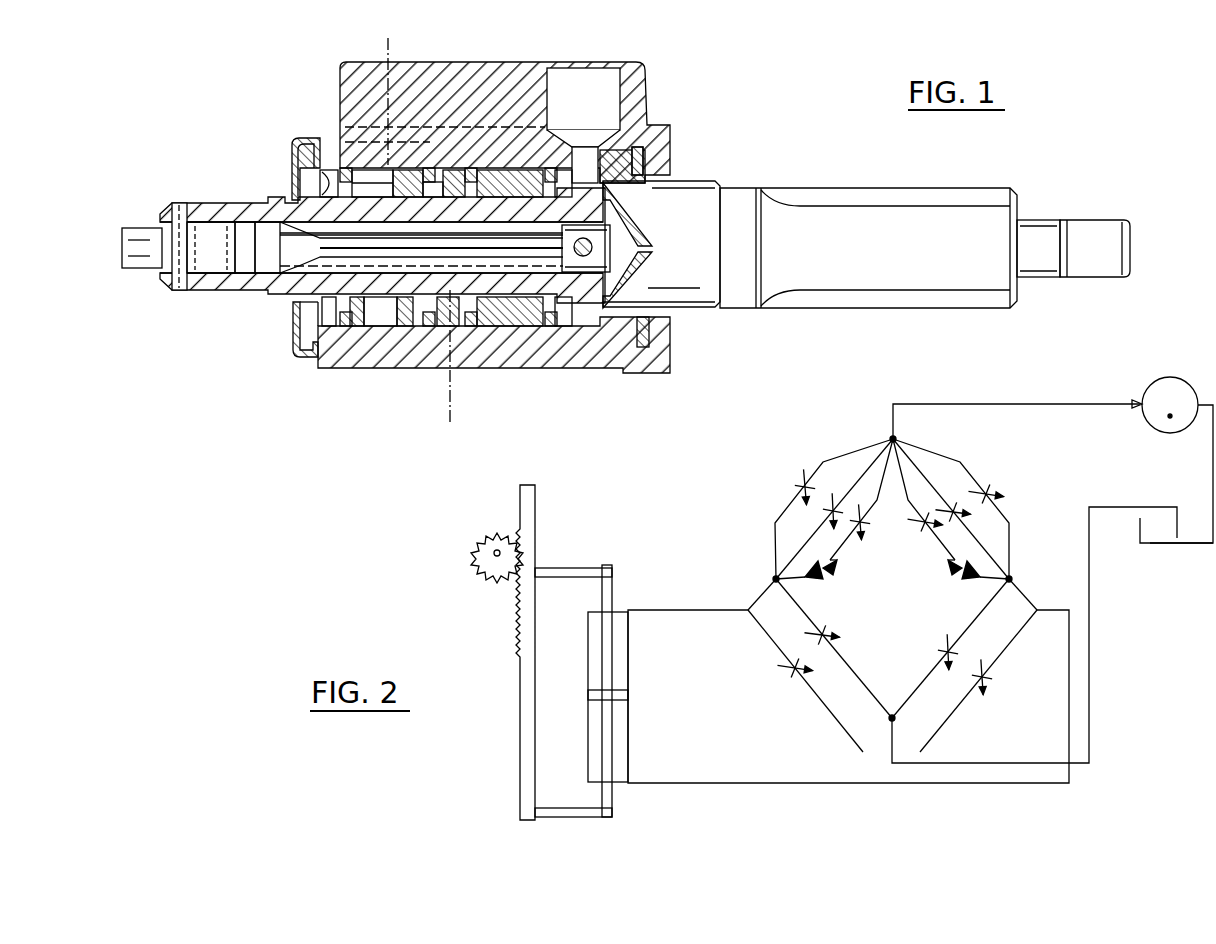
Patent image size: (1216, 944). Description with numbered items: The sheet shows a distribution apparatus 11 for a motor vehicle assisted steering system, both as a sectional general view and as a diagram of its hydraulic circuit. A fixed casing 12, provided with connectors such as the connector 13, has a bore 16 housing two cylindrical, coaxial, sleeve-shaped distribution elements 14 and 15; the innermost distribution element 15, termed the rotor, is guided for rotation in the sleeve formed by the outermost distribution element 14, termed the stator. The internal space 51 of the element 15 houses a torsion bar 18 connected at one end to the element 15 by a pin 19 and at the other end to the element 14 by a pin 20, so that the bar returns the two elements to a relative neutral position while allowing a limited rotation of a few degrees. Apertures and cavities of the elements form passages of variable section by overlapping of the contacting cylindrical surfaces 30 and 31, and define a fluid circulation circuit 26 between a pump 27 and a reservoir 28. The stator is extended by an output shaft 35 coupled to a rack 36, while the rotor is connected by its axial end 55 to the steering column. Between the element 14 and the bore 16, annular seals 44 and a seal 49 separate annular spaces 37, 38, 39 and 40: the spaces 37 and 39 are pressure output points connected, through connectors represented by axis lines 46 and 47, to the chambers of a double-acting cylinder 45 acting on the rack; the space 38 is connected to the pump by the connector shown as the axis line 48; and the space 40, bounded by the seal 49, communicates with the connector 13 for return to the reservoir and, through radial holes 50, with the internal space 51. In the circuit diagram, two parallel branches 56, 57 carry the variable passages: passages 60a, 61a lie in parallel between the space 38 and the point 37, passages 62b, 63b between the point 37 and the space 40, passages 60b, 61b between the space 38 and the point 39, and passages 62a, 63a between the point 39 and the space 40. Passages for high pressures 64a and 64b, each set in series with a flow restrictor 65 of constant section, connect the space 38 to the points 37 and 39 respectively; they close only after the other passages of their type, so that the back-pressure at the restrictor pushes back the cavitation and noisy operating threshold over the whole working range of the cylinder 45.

In FIG. 1, the distribution apparatus 11 is at (268, 190).
In FIG. 1, the fixed casing 12 is at (358, 90).
In FIG. 1, the connector 13 is at (620, 85).
In FIG. 1, the outermost distribution element 14 is at (667, 205).
In FIG. 1, the innermost distribution element 15 is at (556, 330).
In FIG. 1, the bore 16 is at (398, 330).
In FIG. 1, the torsion bar 18 is at (268, 285).
In FIG. 1, the pin 19 is at (183, 290).
In FIG. 1, the pin 20 is at (593, 247).
In FIG. 2, the fluid circulation circuit 26 is at (882, 613).
In FIG. 2, the pump 27 is at (1176, 460).
In FIG. 2, the reservoir 28 is at (1190, 519).
In FIG. 1, the cylindrical surface 30 is at (523, 170).
In FIG. 1, the cylindrical surface 31 is at (312, 150).
In FIG. 1, the output shaft 35 is at (920, 223).
In FIG. 2, the output shaft 35 is at (478, 549).
In FIG. 2, the rack 36 is at (527, 505).
In FIG. 1, the annular space 37 is at (348, 170).
In FIG. 2, the annular space 37 is at (748, 606).
In FIG. 1, the annular space 38 is at (445, 168).
In FIG. 2, the annular space 38 is at (900, 438).
In FIG. 1, the annular space 39 is at (476, 170).
In FIG. 2, the annular space 39 is at (1040, 600).
In FIG. 1, the annular space 40 is at (600, 163).
In FIG. 2, the annular space 40 is at (885, 728).
In FIG. 1, the annular seals 44 is at (323, 343).
In FIG. 2, the double-acting cylinder 45 is at (628, 665).
In FIG. 1, the axis line 46 is at (386, 48).
In FIG. 1, the axis line 47 is at (498, 178).
In FIG. 1, the axis line 48 is at (452, 422).
In FIG. 1, the annular seal 49 is at (652, 332).
In FIG. 1, the radial holes 50 is at (590, 330).
In FIG. 1, the internal space 51 is at (365, 330).
In FIG. 1, the axial end 55 is at (157, 290).
In FIG. 2, the branch 56 is at (757, 576).
In FIG. 2, the branch 57 is at (968, 450).
In FIG. 2, the passage 60a is at (786, 485).
In FIG. 2, the passage 60b is at (1002, 493).
In FIG. 2, the passage 61a is at (814, 514).
In FIG. 2, the passage 61b is at (947, 497).
In FIG. 2, the passage 62a is at (924, 651).
In FIG. 2, the passage 62b is at (841, 634).
In FIG. 2, the passage 63a is at (999, 677).
In FIG. 2, the passage 63b is at (818, 673).
In FIG. 2, the passage for high pressures 64a is at (858, 530).
In FIG. 2, the passage for high pressures 64b is at (927, 530).
In FIG. 2, the flow restrictor 65 is at (838, 580).